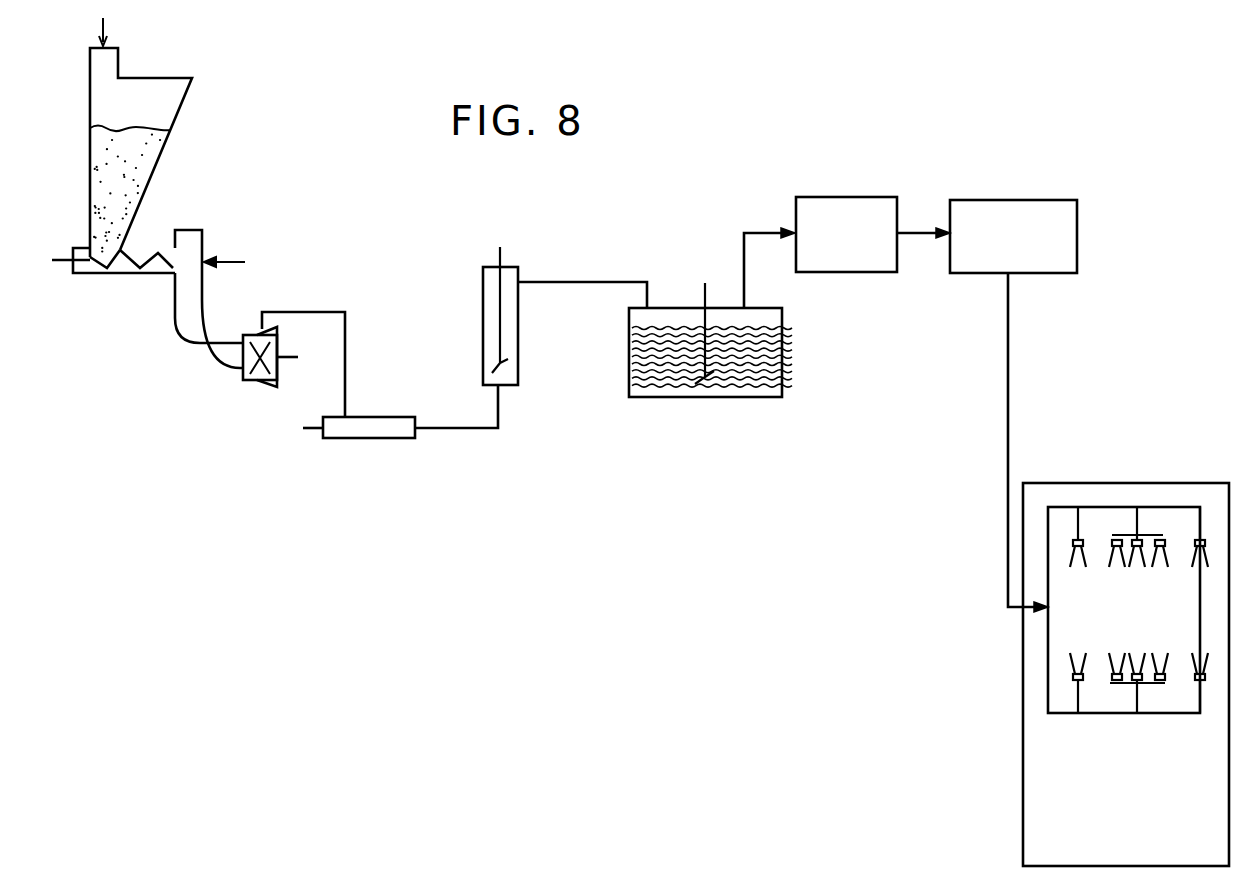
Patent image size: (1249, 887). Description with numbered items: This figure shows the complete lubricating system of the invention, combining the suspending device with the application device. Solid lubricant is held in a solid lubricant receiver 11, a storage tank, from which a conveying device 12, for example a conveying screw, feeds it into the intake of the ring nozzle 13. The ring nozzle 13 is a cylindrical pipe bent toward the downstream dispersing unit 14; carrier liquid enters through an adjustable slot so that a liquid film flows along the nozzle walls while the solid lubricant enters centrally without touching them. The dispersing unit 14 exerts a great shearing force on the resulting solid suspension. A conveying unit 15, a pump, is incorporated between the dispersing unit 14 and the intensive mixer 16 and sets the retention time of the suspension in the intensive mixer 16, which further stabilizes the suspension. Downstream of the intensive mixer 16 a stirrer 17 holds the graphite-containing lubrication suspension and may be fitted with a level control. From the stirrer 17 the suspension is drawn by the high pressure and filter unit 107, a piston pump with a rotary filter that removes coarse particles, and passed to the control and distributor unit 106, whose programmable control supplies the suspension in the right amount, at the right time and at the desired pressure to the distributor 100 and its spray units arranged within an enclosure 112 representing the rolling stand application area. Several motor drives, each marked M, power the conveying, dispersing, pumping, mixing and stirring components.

The solid lubricant receiver 11 is at (143, 172).
The conveying device 12 is at (145, 275).
The ring nozzle 13 is at (195, 297).
The dispersing unit 14 is at (258, 381).
The conveying unit 15 is at (370, 439).
The intensive mixer 16 is at (513, 321).
The stirrer 17 is at (715, 412).
The high pressure and filter unit 107 is at (873, 234).
The control and distributor unit 106 is at (1013, 406).
The distributor 100 is at (1149, 515).
The treatment chamber 112 is at (1126, 674).